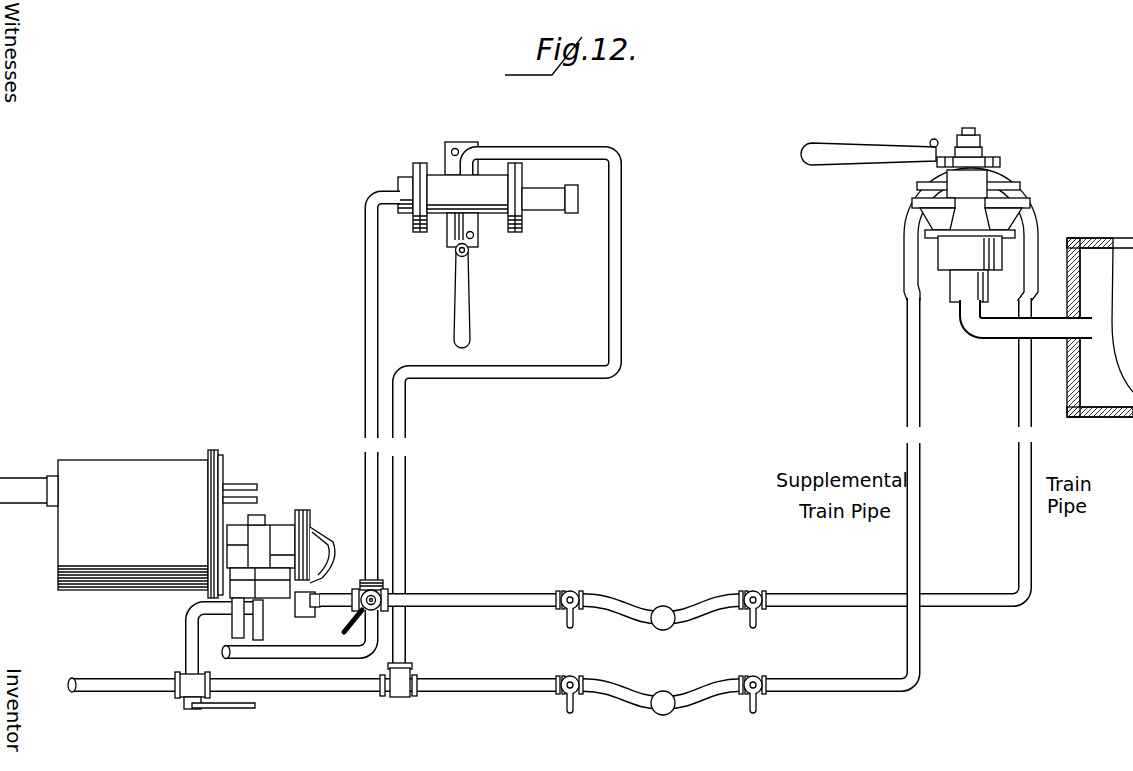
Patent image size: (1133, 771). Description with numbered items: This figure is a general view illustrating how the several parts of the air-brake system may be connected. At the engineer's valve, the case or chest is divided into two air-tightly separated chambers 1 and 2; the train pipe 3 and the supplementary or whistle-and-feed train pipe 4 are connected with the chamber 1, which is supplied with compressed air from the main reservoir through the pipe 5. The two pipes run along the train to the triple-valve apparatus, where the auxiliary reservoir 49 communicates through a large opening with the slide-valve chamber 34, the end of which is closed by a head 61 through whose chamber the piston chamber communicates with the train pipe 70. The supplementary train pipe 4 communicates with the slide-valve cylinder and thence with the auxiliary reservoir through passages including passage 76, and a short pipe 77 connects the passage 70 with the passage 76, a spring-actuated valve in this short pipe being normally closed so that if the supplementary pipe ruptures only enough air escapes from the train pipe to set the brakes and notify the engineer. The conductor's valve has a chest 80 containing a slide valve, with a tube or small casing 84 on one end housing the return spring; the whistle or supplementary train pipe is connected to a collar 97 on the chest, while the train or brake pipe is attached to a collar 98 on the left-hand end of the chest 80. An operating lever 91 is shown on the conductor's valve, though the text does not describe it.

The chamber 1 is at (971, 200).
The chamber 2 is at (970, 266).
The train pipe 3 is at (1040, 217).
The supplementary train pipe 4 is at (905, 258).
The pipe 5 is at (1006, 340).
The slide-valve chamber 34 is at (255, 537).
The auxiliary reservoir 49 is at (145, 485).
The head 61 is at (315, 540).
The train pipe 70 is at (318, 595).
The passage 76 is at (252, 612).
The short pipe 77 is at (298, 614).
The chest 80 is at (455, 207).
The tube 84 is at (538, 212).
The lever 91 is at (484, 296).
The collar 97 is at (460, 170).
The collar 98 is at (405, 183).